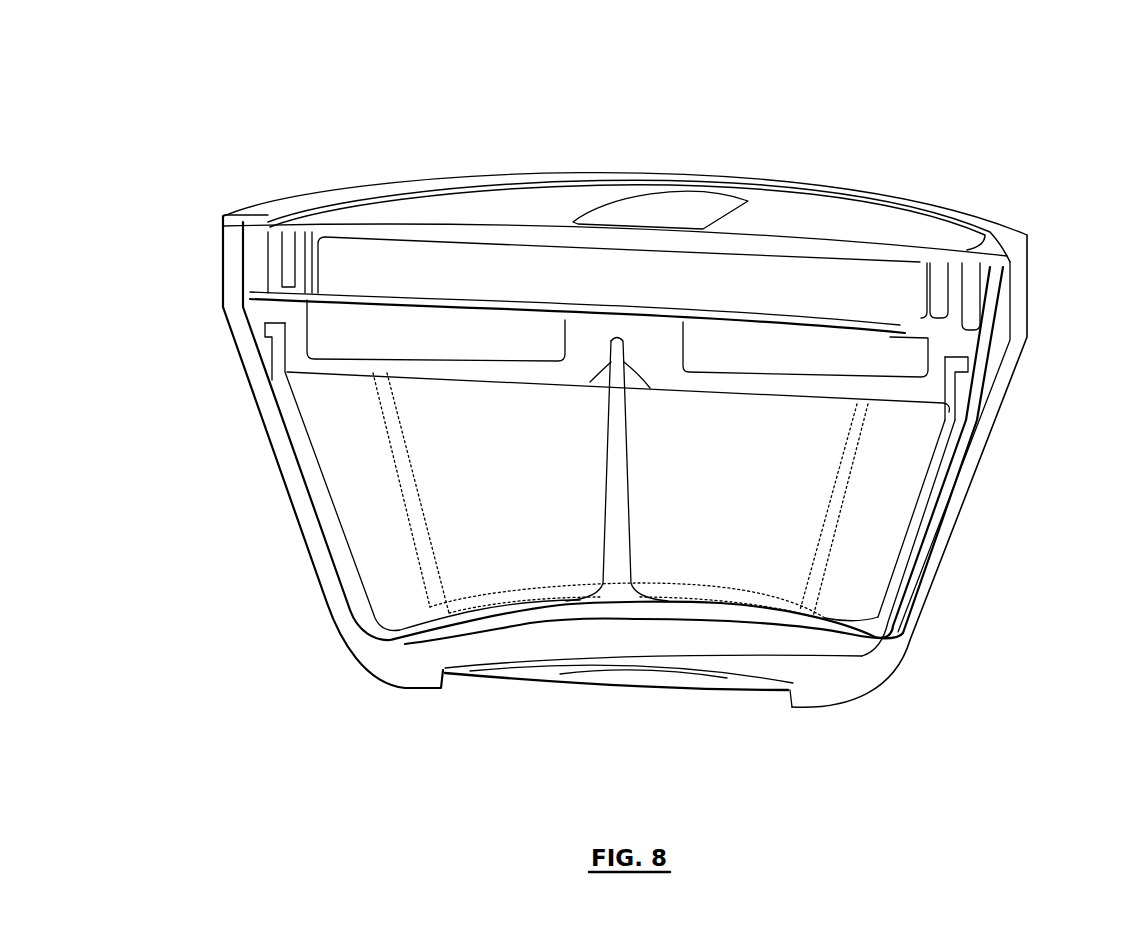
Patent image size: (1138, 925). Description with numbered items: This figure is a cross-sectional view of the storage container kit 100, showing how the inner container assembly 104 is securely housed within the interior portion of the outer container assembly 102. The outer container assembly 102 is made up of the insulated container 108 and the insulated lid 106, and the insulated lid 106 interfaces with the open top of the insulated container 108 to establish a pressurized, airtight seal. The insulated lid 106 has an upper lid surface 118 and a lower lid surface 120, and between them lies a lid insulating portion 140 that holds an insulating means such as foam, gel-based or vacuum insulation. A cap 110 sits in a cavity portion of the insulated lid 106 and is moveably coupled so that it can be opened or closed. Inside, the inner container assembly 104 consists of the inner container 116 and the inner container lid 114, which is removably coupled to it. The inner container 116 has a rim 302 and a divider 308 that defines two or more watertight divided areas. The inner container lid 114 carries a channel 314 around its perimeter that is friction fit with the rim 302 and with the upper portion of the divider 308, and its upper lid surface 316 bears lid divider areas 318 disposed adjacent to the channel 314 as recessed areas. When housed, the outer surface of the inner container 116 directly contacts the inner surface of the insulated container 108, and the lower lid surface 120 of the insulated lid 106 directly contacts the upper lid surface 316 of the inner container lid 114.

The storage container kit 100 is at (152, 80).
The outer container assembly 102 is at (1123, 184).
The inner container assembly 104 is at (185, 249).
The insulated lid 106 is at (976, 190).
The insulated container 108 is at (1037, 280).
The cap 110 is at (639, 206).
The inner container lid 114 is at (266, 318).
The inner container 116 is at (306, 456).
The upper lid surface 118 is at (421, 204).
The lower lid surface 120 is at (352, 298).
The lid insulating portion 140 is at (500, 266).
The rim 302 is at (958, 372).
The divider 308 is at (606, 410).
The channel 314 is at (970, 356).
The upper lid surface 316 is at (680, 320).
The lid divider areas 318 is at (791, 346).